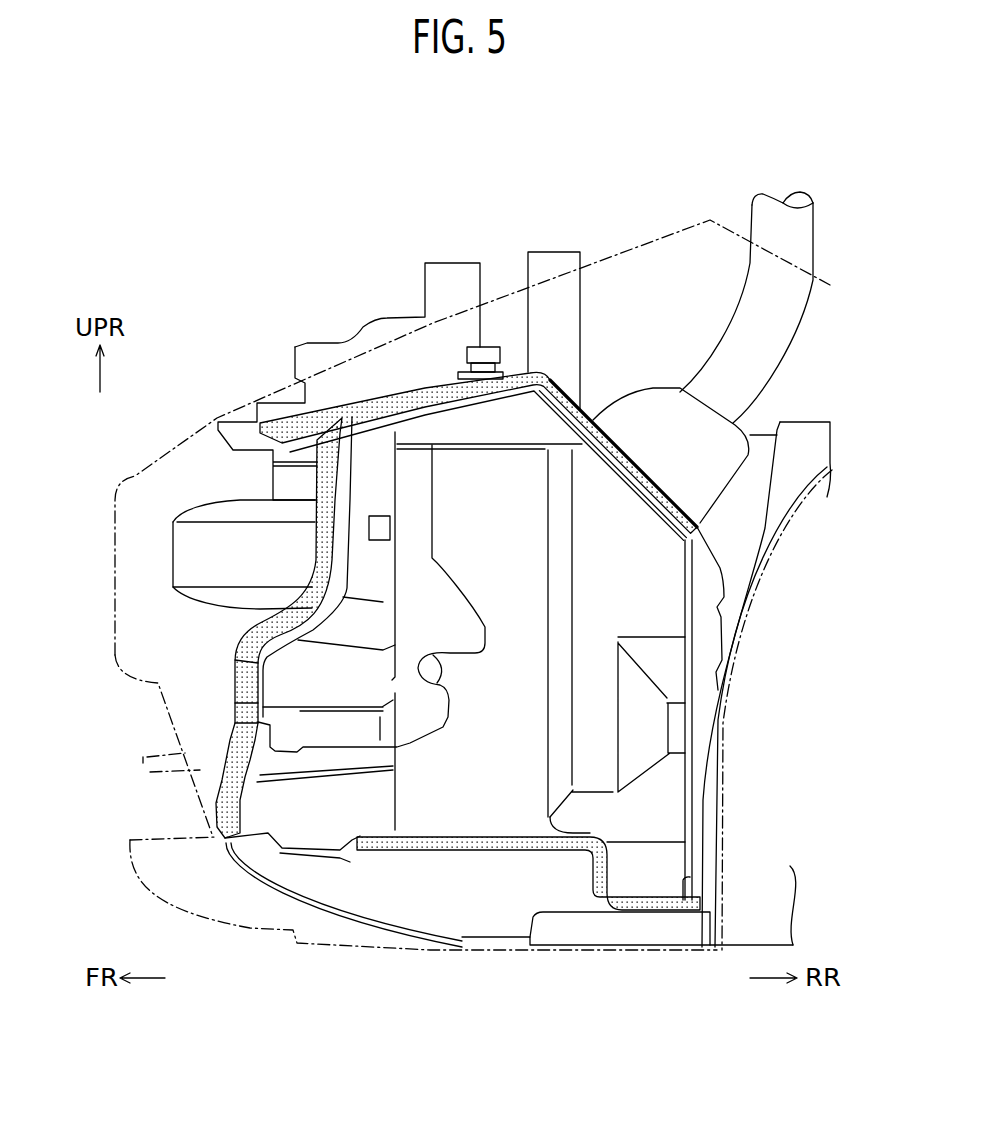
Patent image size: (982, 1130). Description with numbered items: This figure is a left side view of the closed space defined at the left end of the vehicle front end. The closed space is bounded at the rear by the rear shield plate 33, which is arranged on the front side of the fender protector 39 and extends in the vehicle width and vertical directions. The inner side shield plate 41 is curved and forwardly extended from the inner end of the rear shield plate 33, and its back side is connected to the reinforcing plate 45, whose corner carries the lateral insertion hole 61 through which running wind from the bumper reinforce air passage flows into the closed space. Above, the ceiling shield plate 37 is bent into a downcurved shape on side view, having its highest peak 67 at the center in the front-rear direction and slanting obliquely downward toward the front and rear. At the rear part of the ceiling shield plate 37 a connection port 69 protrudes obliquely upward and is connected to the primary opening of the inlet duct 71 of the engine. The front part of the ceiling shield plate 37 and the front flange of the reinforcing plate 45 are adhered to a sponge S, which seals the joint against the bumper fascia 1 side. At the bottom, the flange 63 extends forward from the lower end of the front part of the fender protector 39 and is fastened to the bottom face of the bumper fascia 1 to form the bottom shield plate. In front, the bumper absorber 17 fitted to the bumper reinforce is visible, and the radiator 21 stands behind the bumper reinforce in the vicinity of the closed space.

The bumper fascia 1 is at (112, 514).
The bumper absorber 17 is at (184, 556).
The radiator 21 is at (553, 265).
The rear shield plate 33 is at (684, 668).
The ceiling shield plate 37 is at (458, 423).
The fender protector 39 is at (787, 485).
The inner side shield plate 41 is at (518, 712).
The reinforcing plate 45 is at (343, 687).
The insertion hole 61 is at (390, 524).
The flange 63 is at (572, 946).
The peak 67 is at (547, 405).
The connection port 69 is at (667, 430).
The inlet duct 71 is at (770, 207).
The sponge S is at (292, 422).